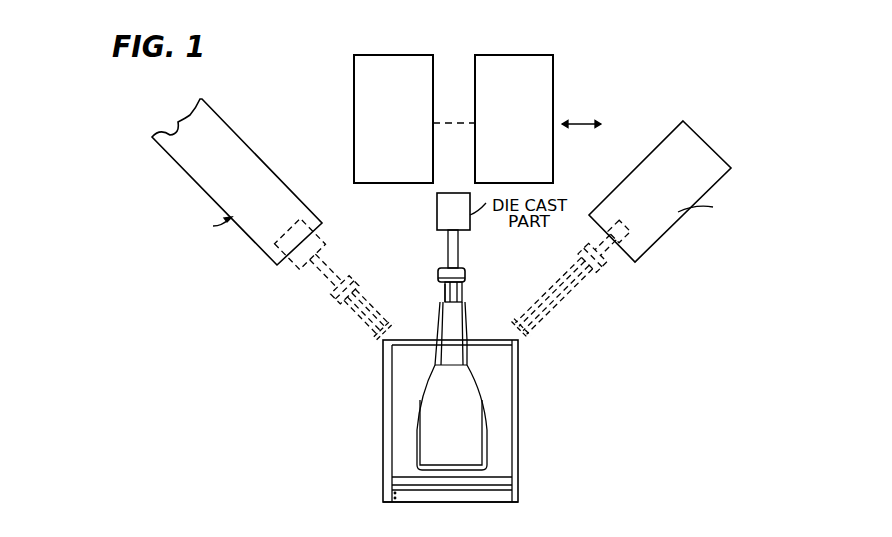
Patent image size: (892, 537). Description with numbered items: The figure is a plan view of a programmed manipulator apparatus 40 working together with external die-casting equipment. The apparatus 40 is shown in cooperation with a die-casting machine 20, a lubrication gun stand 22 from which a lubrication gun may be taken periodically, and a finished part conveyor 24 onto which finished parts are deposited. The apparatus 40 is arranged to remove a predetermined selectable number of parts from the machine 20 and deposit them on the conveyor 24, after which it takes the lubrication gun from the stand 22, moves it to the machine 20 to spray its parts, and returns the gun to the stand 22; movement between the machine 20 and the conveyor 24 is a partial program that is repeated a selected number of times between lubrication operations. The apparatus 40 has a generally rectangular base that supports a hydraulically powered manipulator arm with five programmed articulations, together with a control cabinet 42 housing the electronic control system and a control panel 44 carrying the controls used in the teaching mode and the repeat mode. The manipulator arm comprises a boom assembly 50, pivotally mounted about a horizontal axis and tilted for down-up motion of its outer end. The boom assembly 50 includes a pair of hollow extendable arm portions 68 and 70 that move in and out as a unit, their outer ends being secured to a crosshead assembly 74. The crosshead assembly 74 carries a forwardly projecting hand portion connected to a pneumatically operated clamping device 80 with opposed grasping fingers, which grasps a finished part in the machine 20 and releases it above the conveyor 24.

The die-casting machine 20 is at (354, 87).
The lubrication gun stand 22 is at (718, 165).
The finished part conveyor 24 is at (246, 147).
The programmed manipulator apparatus 40 is at (518, 418).
The control cabinet 42 is at (485, 504).
The control panel 44 is at (450, 495).
The boom assembly 50 is at (469, 330).
The extendable arm portion 68 is at (444, 292).
The extendable arm portion 70 is at (462, 293).
The crosshead assembly 74 is at (465, 274).
The clamping device 80 is at (458, 252).